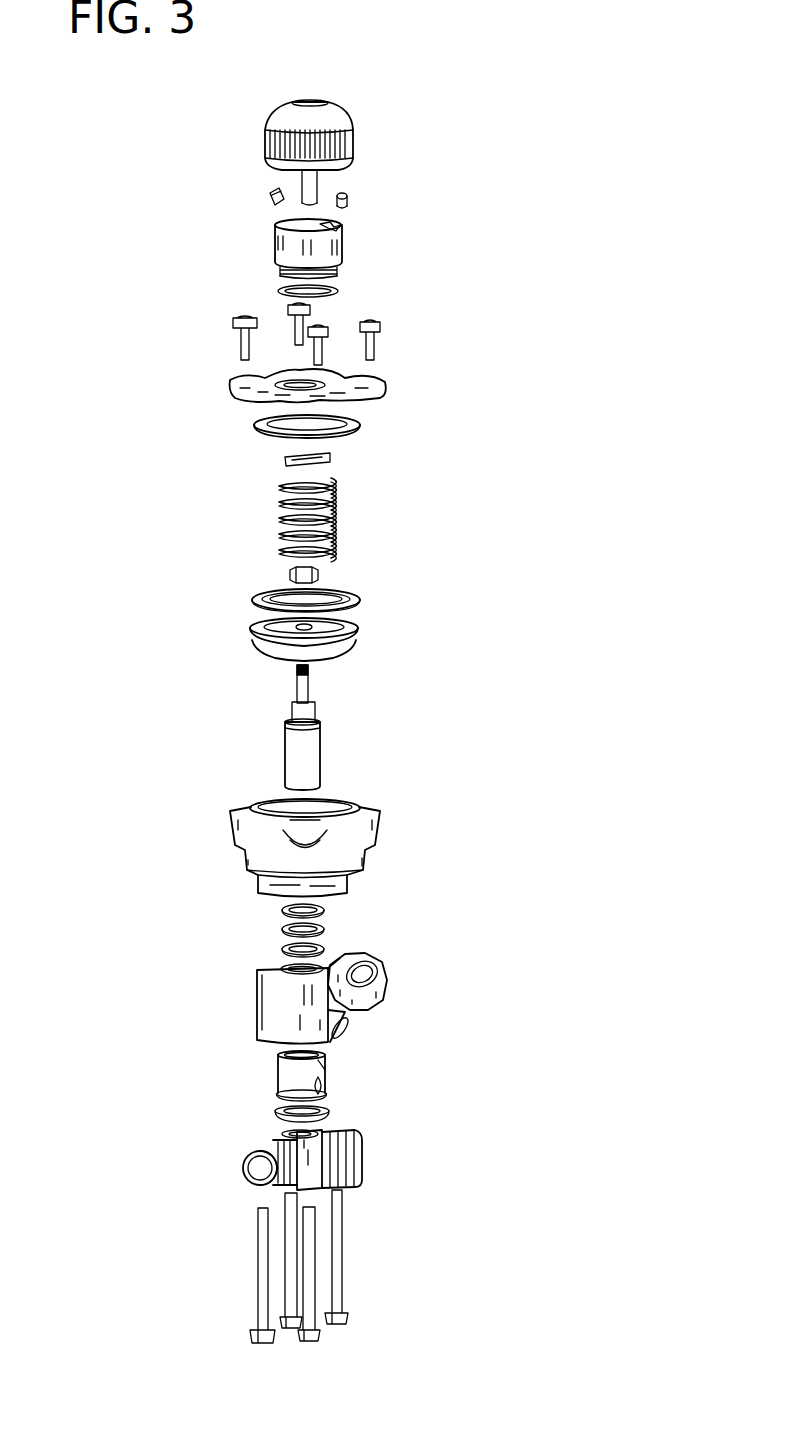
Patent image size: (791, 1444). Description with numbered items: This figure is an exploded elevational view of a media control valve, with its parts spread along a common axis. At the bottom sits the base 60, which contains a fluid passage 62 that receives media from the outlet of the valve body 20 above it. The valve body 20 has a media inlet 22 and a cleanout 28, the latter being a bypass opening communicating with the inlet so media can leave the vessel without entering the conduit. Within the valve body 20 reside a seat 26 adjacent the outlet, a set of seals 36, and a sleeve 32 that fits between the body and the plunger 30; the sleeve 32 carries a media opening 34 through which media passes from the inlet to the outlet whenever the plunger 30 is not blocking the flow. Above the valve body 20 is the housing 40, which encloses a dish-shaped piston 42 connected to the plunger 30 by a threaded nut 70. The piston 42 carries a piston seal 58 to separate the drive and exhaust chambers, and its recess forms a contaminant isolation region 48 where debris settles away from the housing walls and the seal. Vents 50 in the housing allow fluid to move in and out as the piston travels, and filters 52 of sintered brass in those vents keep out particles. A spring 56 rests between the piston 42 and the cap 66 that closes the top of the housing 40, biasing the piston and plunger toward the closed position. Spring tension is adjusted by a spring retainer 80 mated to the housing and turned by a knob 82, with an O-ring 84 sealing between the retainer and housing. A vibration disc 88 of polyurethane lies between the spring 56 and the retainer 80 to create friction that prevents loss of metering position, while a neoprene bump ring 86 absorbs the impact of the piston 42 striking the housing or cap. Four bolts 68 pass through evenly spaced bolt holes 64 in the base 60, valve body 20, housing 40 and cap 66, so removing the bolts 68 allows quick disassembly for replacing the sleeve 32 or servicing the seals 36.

The valve body 20 is at (360, 1015).
The media inlet 22 is at (370, 962).
The seat 26 is at (272, 1108).
The cleanout 28 is at (352, 1037).
The plunger 30 is at (320, 747).
The sleeve 32 is at (325, 1090).
The media opening 34 is at (325, 1070).
The seals 36 is at (282, 950).
The housing 40 is at (363, 853).
The piston 42 is at (357, 630).
The contaminant isolation region 48 is at (353, 620).
The vents 50 is at (340, 230).
The filters 52 is at (271, 191).
The spring 56 is at (331, 484).
The piston seal 58 is at (356, 598).
The base 60 is at (347, 1178).
The fluid passage 62 is at (260, 1168).
The bolt holes 64 is at (367, 377).
The cap 66 is at (383, 396).
The bolts 68 is at (380, 327).
The threaded nut 70 is at (290, 573).
The spring retainer 80 is at (343, 247).
The knob 82 is at (340, 103).
The O-ring 84 is at (345, 290).
The bump ring 86 is at (360, 428).
The vibration disc 88 is at (287, 458).